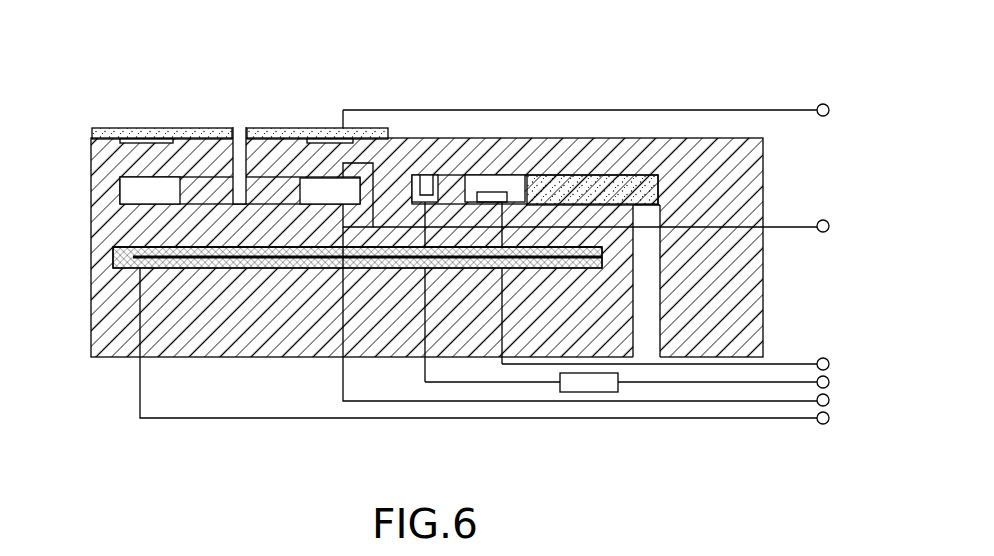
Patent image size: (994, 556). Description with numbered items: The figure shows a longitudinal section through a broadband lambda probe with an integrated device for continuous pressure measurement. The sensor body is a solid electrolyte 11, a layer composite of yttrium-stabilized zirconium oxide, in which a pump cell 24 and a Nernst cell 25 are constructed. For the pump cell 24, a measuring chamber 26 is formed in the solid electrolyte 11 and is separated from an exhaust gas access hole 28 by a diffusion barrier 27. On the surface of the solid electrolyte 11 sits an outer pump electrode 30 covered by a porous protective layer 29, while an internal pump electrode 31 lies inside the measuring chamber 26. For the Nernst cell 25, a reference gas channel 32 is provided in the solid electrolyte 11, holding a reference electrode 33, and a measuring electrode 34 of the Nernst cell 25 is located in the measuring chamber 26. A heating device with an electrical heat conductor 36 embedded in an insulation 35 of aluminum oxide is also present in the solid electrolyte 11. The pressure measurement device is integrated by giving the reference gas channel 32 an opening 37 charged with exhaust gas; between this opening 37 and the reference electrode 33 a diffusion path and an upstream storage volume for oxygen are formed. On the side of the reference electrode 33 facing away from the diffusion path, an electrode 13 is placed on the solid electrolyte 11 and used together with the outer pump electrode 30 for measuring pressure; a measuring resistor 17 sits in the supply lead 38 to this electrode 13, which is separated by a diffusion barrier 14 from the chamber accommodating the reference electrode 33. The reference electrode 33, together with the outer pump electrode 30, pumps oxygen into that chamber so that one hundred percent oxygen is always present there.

The solid electrolyte 11 is at (127, 300).
The electrode 13 is at (425, 173).
The diffusion barrier 14 is at (450, 176).
The measuring resistor 17 is at (588, 392).
The pump cell 24 is at (353, 158).
The Nernst cell 25 is at (353, 222).
The measuring chamber 26 is at (326, 204).
The diffusion barrier 27 is at (272, 176).
The exhaust gas access hole 28 is at (238, 137).
The porous protective layer 29 is at (143, 128).
The outer pump electrode 30 is at (317, 133).
The internal pump electrode 31 is at (322, 172).
The reference gas channel 32 is at (565, 182).
The reference electrode 33 is at (505, 182).
The measuring electrode 34 is at (320, 190).
The insulation 35 is at (113, 250).
The electrical heat conductor 36 is at (158, 252).
The opening 37 is at (647, 340).
The supply lead 38 is at (472, 382).